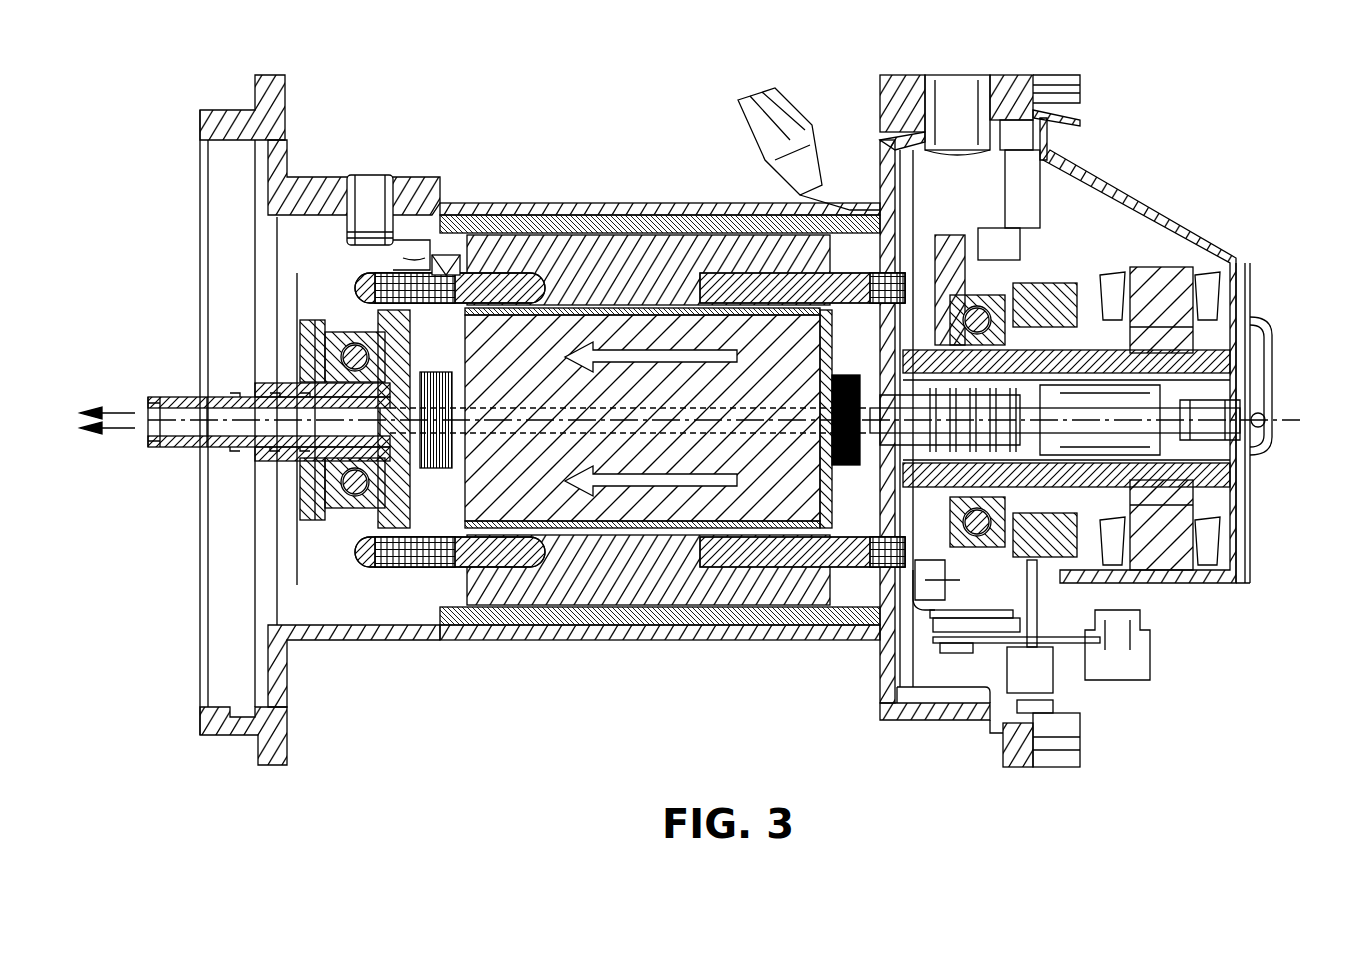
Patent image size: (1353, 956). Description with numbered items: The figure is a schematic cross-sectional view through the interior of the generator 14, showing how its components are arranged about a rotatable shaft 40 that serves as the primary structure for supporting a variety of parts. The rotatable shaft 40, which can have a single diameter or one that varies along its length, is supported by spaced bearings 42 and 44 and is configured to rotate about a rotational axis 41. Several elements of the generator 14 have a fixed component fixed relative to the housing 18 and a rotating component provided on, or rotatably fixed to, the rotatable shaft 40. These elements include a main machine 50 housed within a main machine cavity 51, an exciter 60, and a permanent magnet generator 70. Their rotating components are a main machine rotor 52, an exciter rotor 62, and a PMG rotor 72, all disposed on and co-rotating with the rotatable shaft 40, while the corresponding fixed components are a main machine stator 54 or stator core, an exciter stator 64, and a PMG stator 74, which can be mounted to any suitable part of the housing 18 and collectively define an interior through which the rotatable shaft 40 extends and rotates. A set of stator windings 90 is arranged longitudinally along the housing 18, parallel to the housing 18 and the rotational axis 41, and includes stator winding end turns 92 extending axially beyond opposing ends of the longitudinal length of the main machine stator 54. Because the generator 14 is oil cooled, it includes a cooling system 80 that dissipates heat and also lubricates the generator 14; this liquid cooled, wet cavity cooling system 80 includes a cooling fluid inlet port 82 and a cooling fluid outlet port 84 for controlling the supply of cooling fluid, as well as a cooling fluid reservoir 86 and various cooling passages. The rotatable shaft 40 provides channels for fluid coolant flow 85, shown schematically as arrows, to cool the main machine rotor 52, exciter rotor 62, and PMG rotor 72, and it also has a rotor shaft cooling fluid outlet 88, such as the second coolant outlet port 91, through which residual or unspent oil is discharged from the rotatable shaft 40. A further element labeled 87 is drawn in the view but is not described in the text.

The generator 14 is at (474, 88).
The housing 18 is at (490, 205).
The rotatable shaft 40 is at (229, 456).
The rotational axis 41 is at (1280, 440).
The bearing 42 is at (345, 490).
The bearing 44 is at (975, 522).
The main machine 50 is at (571, 150).
The main machine cavity 51 is at (428, 258).
The main machine rotor 52 is at (500, 512).
The main machine stator 54 is at (572, 590).
The exciter 60 is at (1167, 257).
The exciter rotor 62 is at (1195, 540).
The exciter stator 64 is at (1168, 560).
The permanent magnet generator 70 is at (1072, 262).
The PMG rotor 72 is at (1055, 540).
The PMG stator 74 is at (1085, 638).
The cooling system 80 is at (406, 238).
The cooling fluid inlet port 82 is at (372, 190).
The cooling fluid outlet port 84 is at (745, 115).
The fluid coolant flow 85 is at (608, 475).
The cooling fluid reservoir 86 is at (920, 652).
The circuit board 87 is at (858, 198).
The rotor shaft cooling fluid outlet 88 is at (142, 404).
The stator windings 90 is at (740, 280).
The second coolant outlet port 91 is at (136, 400).
The stator winding end turns 92 is at (862, 252).